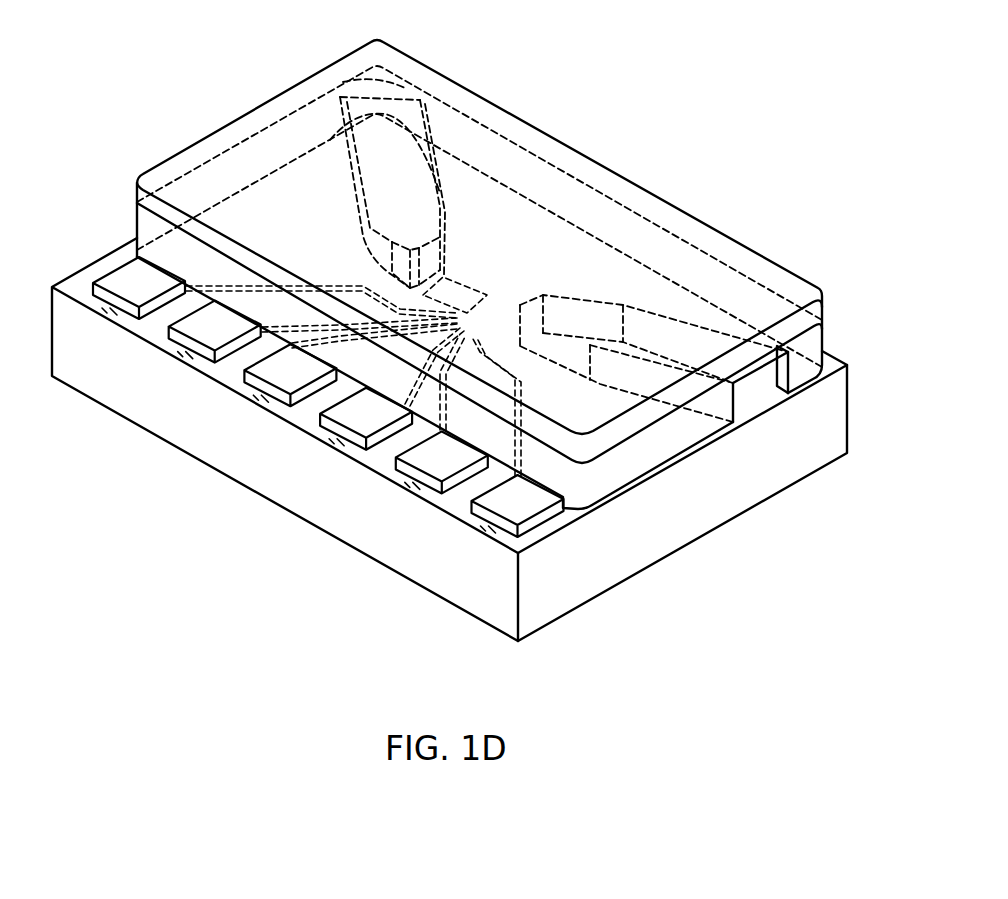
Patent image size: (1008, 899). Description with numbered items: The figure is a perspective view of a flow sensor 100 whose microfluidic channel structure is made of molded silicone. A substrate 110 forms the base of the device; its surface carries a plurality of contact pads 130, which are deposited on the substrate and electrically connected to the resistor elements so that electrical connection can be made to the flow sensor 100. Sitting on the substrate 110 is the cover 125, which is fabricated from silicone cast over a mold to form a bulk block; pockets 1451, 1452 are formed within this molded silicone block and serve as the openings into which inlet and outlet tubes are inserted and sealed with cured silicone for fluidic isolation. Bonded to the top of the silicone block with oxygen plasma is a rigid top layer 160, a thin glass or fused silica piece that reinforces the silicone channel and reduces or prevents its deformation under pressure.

The flow sensor 100 is at (612, 101).
The substrate 110 is at (693, 515).
The cover 125 is at (792, 267).
The rigid top layer 160 is at (673, 230).
The contact pads 130 is at (276, 370).
The pocket 1451 is at (755, 388).
The pocket 1452 is at (393, 97).